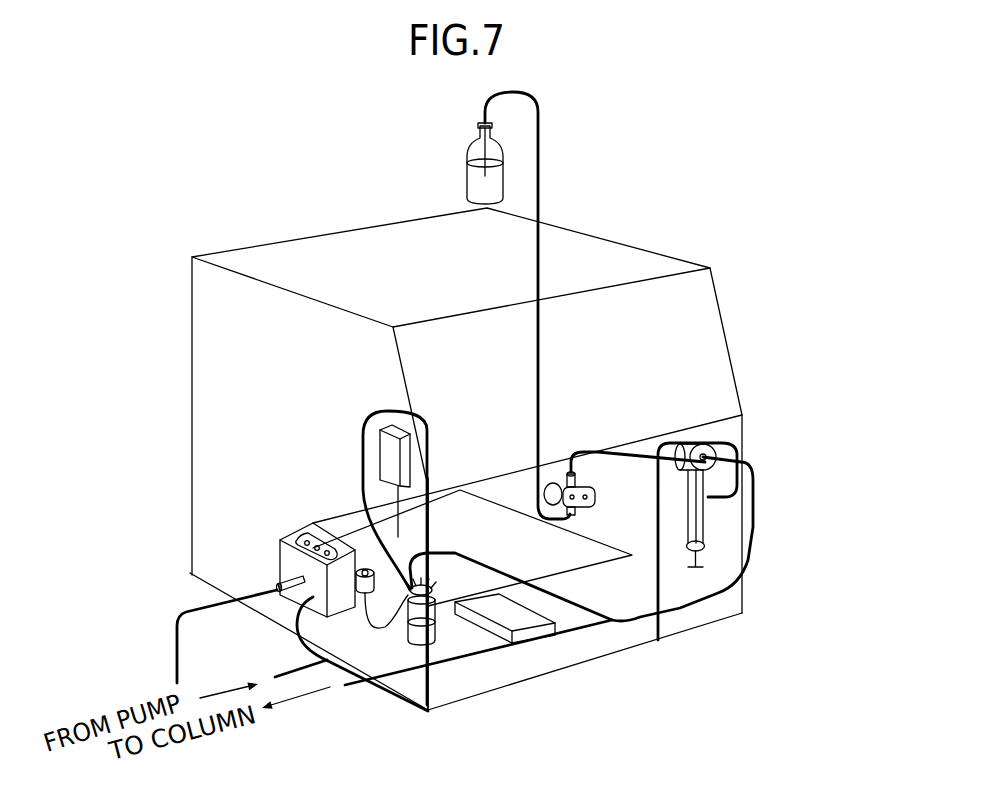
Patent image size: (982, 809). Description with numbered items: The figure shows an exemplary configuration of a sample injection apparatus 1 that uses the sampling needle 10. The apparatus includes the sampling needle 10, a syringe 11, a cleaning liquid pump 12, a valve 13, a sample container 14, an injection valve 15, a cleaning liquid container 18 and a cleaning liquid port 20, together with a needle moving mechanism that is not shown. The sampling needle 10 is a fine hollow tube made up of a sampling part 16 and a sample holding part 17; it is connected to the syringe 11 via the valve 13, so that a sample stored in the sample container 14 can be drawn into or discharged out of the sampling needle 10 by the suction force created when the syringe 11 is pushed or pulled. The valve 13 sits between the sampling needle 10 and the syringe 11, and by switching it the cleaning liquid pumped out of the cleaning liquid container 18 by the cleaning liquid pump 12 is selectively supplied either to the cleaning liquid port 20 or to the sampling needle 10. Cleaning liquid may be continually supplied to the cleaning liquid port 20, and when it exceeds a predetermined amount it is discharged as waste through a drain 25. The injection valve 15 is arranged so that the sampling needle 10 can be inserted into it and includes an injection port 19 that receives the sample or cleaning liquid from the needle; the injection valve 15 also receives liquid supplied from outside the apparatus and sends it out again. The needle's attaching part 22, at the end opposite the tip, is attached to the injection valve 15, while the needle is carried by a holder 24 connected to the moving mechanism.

The sample injection apparatus 1 is at (621, 220).
The sampling needle 10 is at (489, 375).
The syringe 11 is at (719, 513).
The cleaning liquid pump 12 is at (600, 508).
The valve 13 is at (707, 428).
The sample container 14 is at (537, 634).
The injection valve 15 is at (421, 645).
The sampling part 16 is at (400, 517).
The sample holding part 17 is at (388, 407).
The cleaning liquid container 18 is at (466, 169).
The injection port 19 is at (362, 568).
The cleaning liquid port 20 is at (271, 538).
The attaching part 22 is at (400, 642).
The holder 24 is at (380, 453).
The drain 25 is at (176, 637).